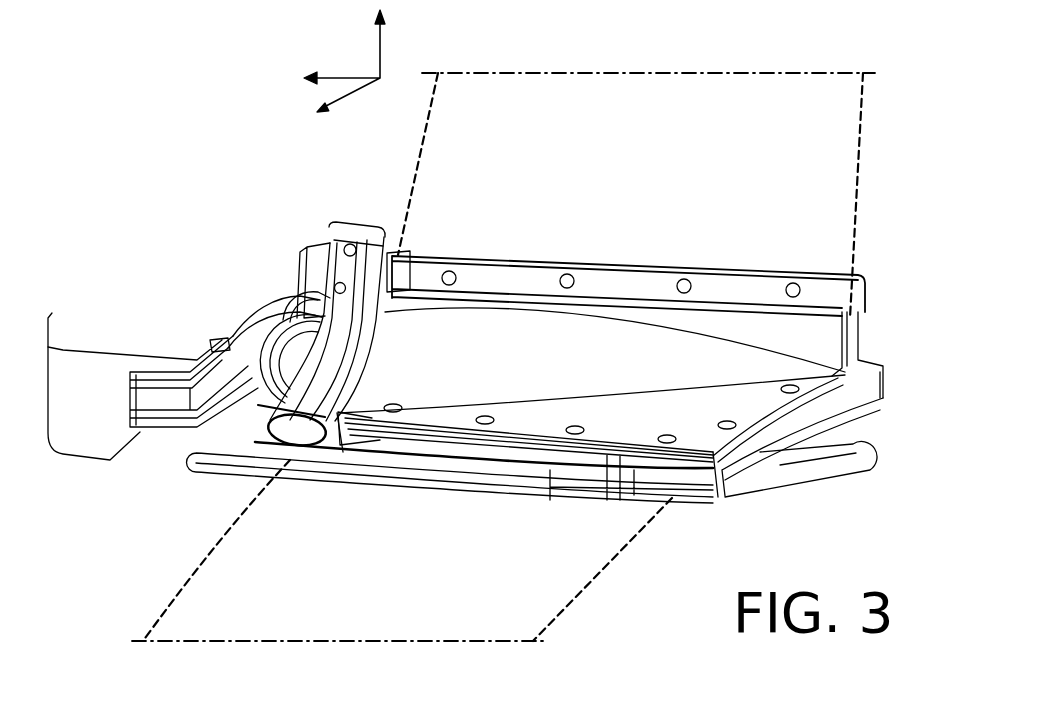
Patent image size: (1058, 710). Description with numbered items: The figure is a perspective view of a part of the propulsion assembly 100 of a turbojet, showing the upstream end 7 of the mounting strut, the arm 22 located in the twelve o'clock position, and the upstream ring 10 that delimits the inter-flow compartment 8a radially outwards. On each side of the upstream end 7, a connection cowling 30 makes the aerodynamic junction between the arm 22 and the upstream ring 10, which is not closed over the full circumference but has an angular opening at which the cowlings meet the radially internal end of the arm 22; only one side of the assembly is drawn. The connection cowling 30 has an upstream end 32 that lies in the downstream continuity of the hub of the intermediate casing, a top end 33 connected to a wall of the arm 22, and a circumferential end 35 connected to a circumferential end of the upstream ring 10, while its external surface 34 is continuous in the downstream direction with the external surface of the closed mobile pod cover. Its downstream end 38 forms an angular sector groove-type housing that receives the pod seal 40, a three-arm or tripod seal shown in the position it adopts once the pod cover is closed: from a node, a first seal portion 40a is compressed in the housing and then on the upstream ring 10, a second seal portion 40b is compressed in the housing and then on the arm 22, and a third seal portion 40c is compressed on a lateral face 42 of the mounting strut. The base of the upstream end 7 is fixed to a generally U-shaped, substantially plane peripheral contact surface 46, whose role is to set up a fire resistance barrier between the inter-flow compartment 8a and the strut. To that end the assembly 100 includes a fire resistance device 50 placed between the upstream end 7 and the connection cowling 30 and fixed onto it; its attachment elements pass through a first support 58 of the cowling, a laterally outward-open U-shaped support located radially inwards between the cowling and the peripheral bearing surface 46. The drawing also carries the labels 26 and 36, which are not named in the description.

The propulsion assembly 100 is at (171, 124).
The arm 22 is at (684, 95).
The floor panel 26 is at (725, 181).
The external surface 34 is at (620, 332).
The top end 33 is at (761, 282).
The end fitting 36 is at (391, 285).
The connection cowling 30 is at (850, 351).
The upstream end 32 is at (790, 410).
The peripheral contact surface 46 is at (827, 485).
The circumferential end 35 is at (522, 435).
The inter-flow compartment 8a is at (452, 550).
The first support 58 is at (418, 458).
The lateral face 42 is at (67, 370).
The upstream end of the mounting strut 7 is at (92, 358).
The pod seal 40 is at (249, 349).
The first seal portion 40a is at (287, 430).
The second seal portion 40b is at (340, 253).
The third seal portion 40c is at (163, 410).
The fire resistance device 50 is at (278, 302).
The downstream end 38 is at (310, 268).
The upstream ring 10 is at (591, 576).